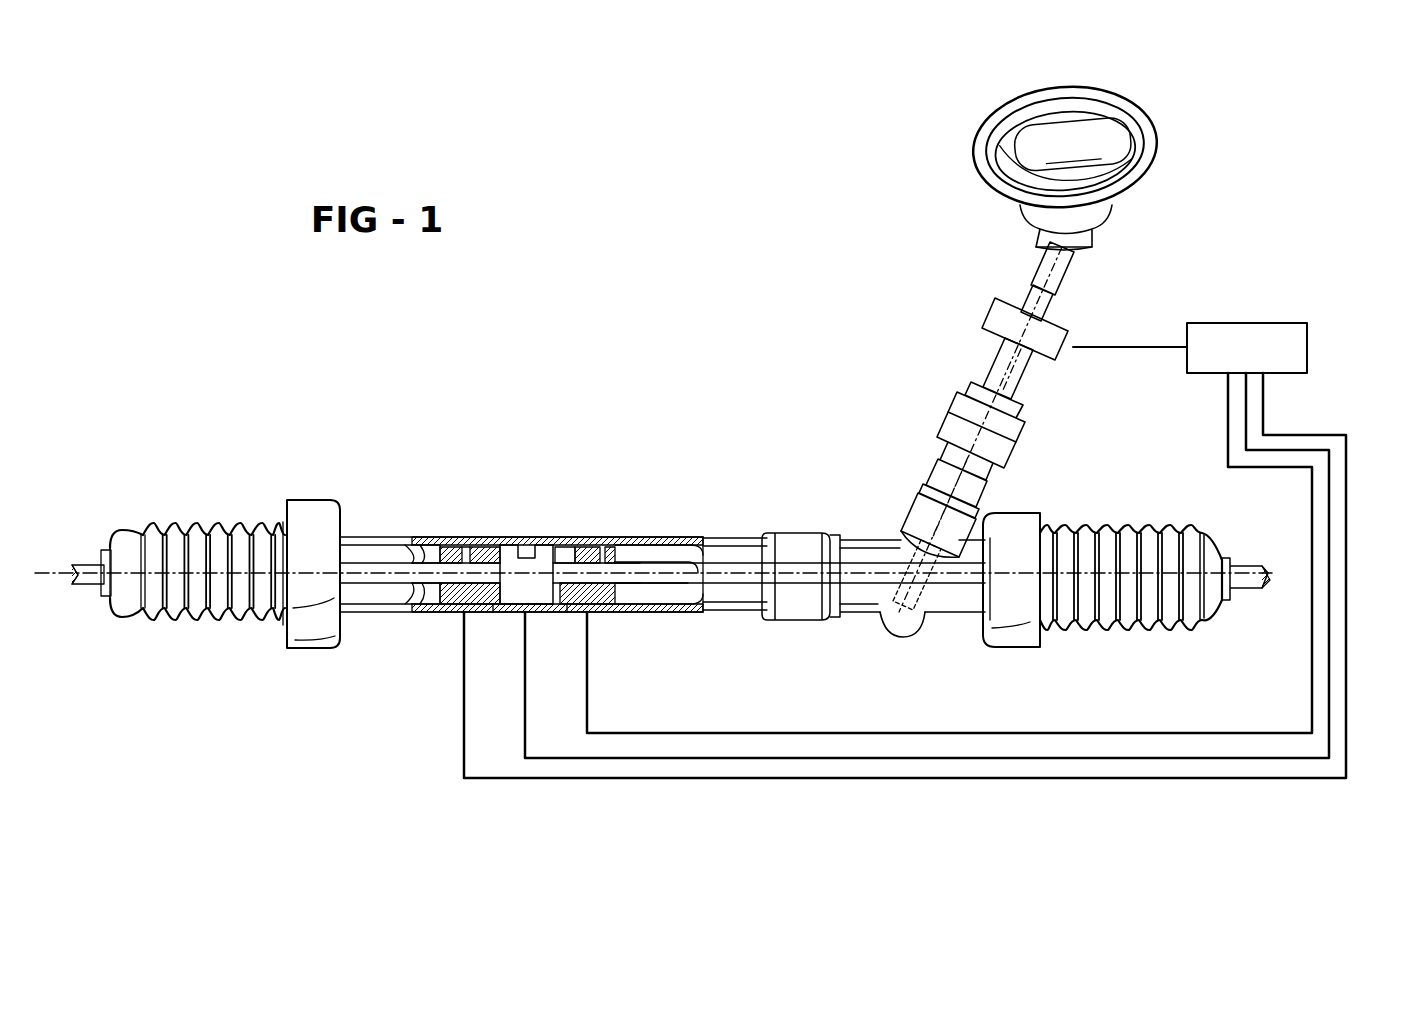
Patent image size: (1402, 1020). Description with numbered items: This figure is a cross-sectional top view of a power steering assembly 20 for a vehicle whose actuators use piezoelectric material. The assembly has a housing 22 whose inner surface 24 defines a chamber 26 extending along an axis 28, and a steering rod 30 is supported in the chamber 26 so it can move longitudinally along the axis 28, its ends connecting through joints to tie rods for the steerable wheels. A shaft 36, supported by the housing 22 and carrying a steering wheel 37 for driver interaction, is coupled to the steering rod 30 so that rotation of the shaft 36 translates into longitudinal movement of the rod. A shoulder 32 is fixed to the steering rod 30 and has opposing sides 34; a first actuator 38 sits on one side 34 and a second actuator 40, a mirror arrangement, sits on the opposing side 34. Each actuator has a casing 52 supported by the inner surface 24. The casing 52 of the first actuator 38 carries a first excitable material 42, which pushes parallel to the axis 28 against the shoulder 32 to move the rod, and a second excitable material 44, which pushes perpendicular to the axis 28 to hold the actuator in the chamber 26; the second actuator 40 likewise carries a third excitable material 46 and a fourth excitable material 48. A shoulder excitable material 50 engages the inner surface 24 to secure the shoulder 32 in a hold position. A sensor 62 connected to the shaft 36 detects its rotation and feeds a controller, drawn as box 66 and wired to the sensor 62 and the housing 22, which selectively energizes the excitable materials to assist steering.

The power steering assembly 20 is at (436, 408).
The housing 22 is at (628, 615).
The inner surface 24 is at (392, 612).
The chamber 26 is at (668, 612).
The axis 28 is at (42, 570).
The steering rod 30 is at (402, 548).
The shoulder 32 is at (515, 612).
The opposing sides 34 is at (493, 612).
The shaft 36 is at (1045, 280).
The steering wheel 37 is at (978, 145).
The first actuator 38 is at (630, 545).
The second actuator 40 is at (412, 546).
The first excitable material 42 is at (557, 547).
The second excitable material 44 is at (592, 547).
The third excitable material 46 is at (497, 547).
The fourth excitable material 48 is at (455, 547).
The shoulder excitable material 50 is at (528, 547).
The casing 52 is at (656, 547).
The sensor 62 is at (1003, 328).
The controller 66 is at (1243, 338).